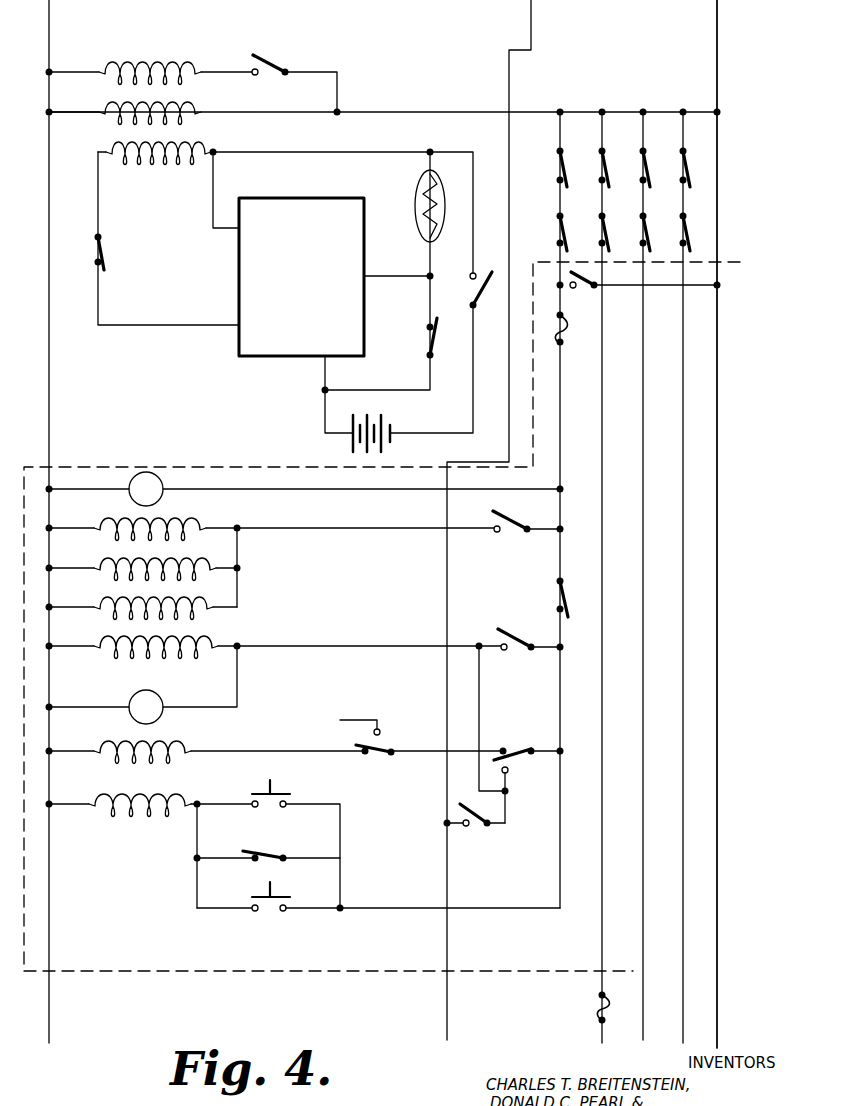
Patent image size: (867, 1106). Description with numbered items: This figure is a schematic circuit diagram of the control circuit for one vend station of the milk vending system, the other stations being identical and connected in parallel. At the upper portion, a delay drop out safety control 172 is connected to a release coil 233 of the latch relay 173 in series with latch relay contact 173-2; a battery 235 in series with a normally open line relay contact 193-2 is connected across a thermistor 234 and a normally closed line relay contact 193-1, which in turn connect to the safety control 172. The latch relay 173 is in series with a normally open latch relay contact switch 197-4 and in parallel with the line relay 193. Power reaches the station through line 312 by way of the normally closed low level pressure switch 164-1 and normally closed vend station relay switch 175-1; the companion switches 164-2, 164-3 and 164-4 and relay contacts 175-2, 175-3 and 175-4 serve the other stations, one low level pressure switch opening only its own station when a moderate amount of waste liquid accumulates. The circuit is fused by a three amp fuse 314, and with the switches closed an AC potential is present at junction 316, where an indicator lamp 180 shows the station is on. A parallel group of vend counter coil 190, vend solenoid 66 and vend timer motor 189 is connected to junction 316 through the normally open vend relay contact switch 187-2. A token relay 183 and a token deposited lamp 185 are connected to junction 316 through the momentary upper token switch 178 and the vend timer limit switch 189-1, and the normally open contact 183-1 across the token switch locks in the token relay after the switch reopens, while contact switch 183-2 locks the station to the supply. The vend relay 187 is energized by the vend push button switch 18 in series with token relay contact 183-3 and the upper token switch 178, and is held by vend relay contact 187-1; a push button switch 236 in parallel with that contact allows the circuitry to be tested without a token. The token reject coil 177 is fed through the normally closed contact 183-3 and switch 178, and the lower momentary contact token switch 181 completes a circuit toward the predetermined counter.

The vend push button switch 18 is at (280, 795).
The vend solenoid 66 is at (213, 560).
The low level pressure switch 164-1 is at (558, 165).
The low level pressure switch 164-2 is at (600, 165).
The low level pressure switch 164-3 is at (640, 165).
The low level pressure switch 164-4 is at (688, 165).
The delay drop out safety control 172 is at (320, 282).
The latch relay 173 is at (135, 62).
The latch relay contact 173-2 is at (104, 247).
The vend station relay switch 175-1 is at (558, 232).
The vend station relay contact switch 175-2 is at (598, 228).
The vend station relay contact switch 175-3 is at (640, 228).
The vend station relay contact switch 175-4 is at (688, 232).
The token reject coil 177 is at (186, 743).
The upper token switch 178 is at (515, 745).
The indicator lamp 180 is at (148, 472).
The lower momentary contact token switch 181 is at (475, 812).
The token relay 183 is at (214, 638).
The token relay contact 183-1 is at (527, 615).
The token relay contact switch 183-2 is at (575, 270).
The token relay contact 183-3 is at (382, 742).
The token deposited lamp 185 is at (160, 697).
The vend relay 187 is at (140, 812).
The vend relay contact 187-1 is at (265, 852).
The vend relay contact switch 187-2 is at (530, 512).
The vend timer motor 189 is at (210, 600).
The vend timer limit switch 189-1 is at (556, 597).
The vend counter coil 190 is at (198, 518).
The line relay 193 is at (193, 104).
The line relay contact 193-1 is at (425, 338).
The line relay contact 193-2 is at (465, 285).
The latch relay contact switch 197-4 is at (272, 63).
The release coil 233 is at (203, 145).
The thermistor 234 is at (415, 200).
The battery 235 is at (345, 445).
The push button switch 236 is at (280, 898).
The line 312 is at (717, 80).
The fuse 314 is at (566, 330).
The junction 316 is at (562, 488).